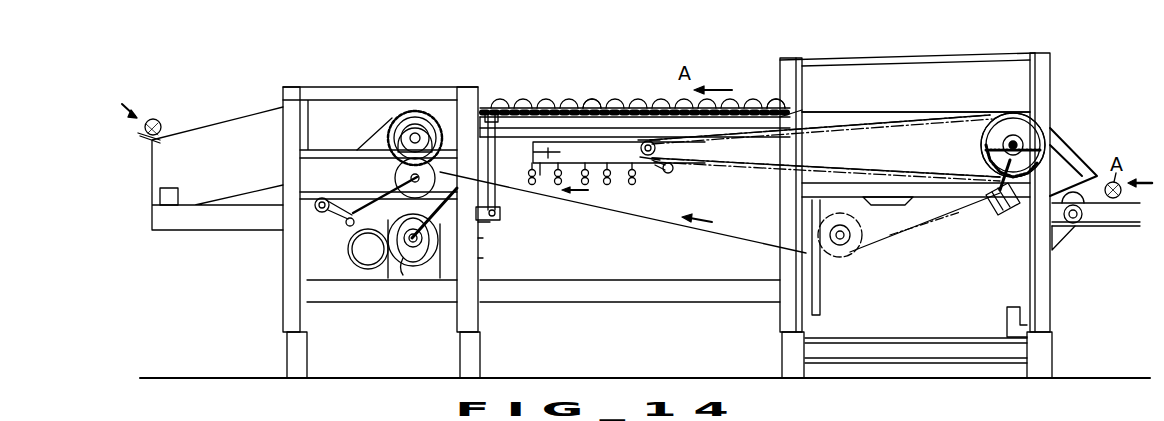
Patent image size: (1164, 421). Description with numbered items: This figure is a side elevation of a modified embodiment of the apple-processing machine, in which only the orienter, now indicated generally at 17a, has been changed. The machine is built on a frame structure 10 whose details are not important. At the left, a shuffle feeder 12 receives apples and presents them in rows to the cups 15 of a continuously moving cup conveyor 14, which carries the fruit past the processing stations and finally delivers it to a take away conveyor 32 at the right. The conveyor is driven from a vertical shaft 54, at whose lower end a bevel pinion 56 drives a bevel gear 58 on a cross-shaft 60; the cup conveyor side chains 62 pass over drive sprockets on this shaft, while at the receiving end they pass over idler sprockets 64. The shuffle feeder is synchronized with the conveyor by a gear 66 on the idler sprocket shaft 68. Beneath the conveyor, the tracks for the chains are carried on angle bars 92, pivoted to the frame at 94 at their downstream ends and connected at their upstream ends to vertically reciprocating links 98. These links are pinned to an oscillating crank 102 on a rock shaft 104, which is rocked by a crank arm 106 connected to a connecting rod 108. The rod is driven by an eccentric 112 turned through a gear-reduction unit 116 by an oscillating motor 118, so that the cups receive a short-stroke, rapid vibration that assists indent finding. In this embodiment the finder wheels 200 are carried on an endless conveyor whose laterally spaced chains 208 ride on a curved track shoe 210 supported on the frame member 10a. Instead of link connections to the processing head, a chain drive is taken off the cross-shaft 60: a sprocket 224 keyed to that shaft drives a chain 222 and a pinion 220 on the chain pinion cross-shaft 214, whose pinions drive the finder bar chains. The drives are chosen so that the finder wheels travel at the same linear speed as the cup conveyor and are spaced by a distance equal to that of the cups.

The frame structure 10 is at (1055, 60).
The frame member 10a is at (718, 105).
The shuffle feeder 12 is at (216, 126).
The cup conveyor 14 is at (512, 95).
The cups 15 is at (606, 102).
The orienter 17a is at (622, 140).
The take away conveyor 32 is at (1106, 228).
The vertical shaft 54 is at (985, 160).
The bevel pinion 56 is at (1000, 208).
The bevel gear 58 is at (1046, 166).
The cross-shaft 60 is at (1022, 143).
The cup conveyor side chains 62 is at (848, 112).
The idler sprockets 64 is at (433, 100).
The gear 66 is at (386, 118).
The idler sprocket shaft 68 is at (985, 118).
The angle bars 92 is at (527, 118).
The pivot 94 is at (792, 112).
The vertically reciprocating links 98 is at (496, 146).
The oscillating crank 102 is at (495, 218).
The rock shaft 104 is at (478, 240).
The connecting rod 108 is at (478, 258).
The crank arm 106 is at (440, 205).
The eccentric 112 is at (408, 268).
The gear-reduction unit 116 is at (405, 268).
The oscillating motor 118 is at (360, 252).
The finder wheels 200 is at (548, 180).
The chains 208 is at (600, 185).
The curved track shoe 210 is at (558, 150).
The cross-shaft 214 is at (665, 172).
The pinion 220 is at (665, 150).
The chain 222 is at (832, 138).
The sprocket 224 is at (985, 136).